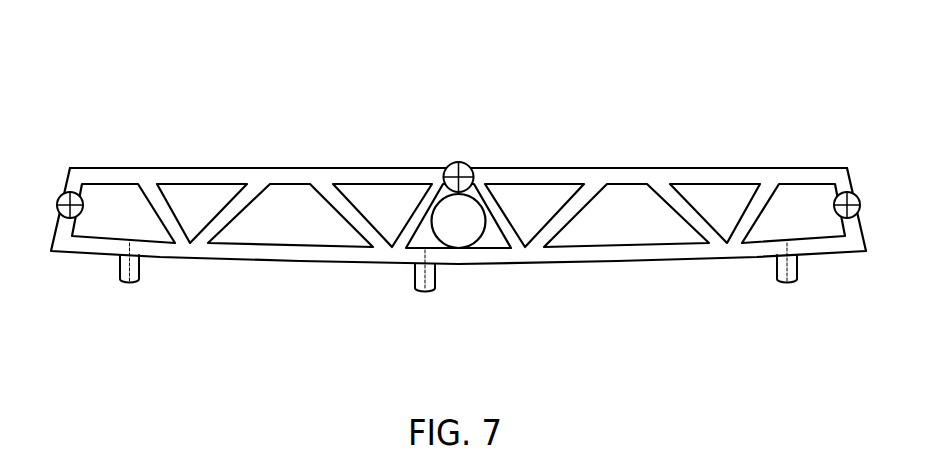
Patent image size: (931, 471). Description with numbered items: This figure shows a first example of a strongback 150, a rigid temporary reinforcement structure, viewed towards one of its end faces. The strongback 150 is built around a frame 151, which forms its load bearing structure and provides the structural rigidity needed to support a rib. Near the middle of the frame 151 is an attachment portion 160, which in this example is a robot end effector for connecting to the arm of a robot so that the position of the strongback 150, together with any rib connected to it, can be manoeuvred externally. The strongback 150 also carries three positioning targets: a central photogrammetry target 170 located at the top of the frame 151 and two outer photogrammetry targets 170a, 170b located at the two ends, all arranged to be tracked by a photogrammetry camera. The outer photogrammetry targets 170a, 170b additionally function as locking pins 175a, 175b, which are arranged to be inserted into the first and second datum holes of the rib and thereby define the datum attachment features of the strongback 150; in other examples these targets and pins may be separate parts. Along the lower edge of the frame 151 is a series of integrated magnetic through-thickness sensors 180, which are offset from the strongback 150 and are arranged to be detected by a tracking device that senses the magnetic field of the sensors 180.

The strongback 150 is at (126, 104).
The frame 151 is at (254, 180).
The attachment portion 160 is at (458, 230).
The central photogrammetry target 170 is at (466, 168).
The outer photogrammetry target 170a is at (63, 194).
The outer photogrammetry target 170b is at (840, 193).
The locking pin 175a is at (68, 219).
The locking pin 175b is at (848, 219).
The magnetic through-thickness sensor 180 is at (135, 286).